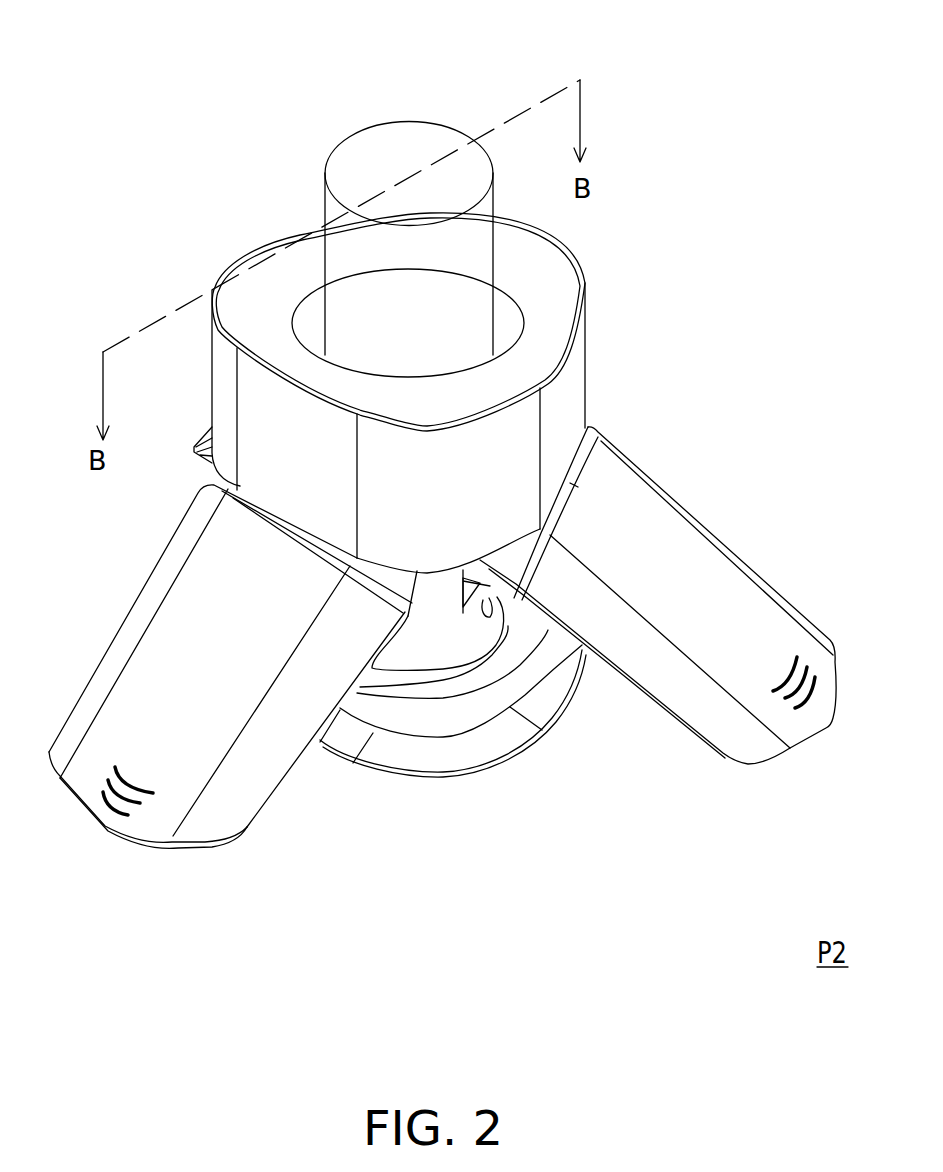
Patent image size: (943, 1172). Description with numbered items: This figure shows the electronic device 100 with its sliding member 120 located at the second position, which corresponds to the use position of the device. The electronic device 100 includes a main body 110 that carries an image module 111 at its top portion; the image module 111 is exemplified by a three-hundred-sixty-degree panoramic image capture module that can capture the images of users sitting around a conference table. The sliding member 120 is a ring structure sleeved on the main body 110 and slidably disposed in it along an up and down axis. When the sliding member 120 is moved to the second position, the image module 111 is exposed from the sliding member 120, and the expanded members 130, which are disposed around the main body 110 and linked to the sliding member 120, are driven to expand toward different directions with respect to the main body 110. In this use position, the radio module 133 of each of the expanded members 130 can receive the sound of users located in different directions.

The electronic device 100 is at (220, 99).
The main body 110 is at (441, 633).
The image module 111 is at (478, 258).
The sliding member 120 is at (567, 398).
The expanded members 130 is at (153, 597).
The radio module 133 is at (120, 810).